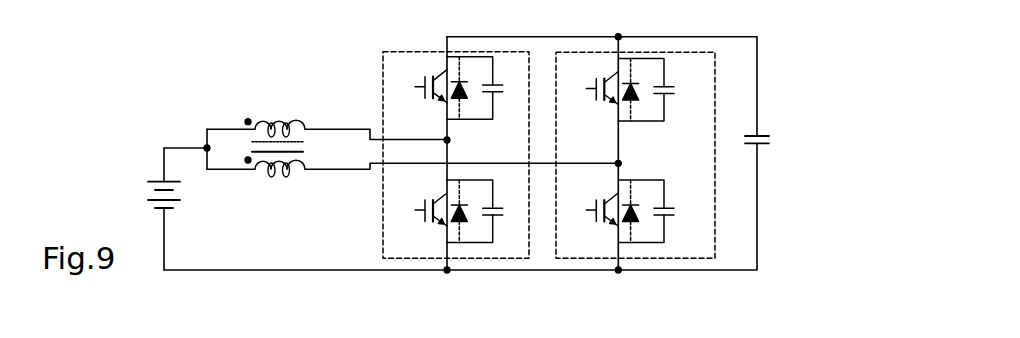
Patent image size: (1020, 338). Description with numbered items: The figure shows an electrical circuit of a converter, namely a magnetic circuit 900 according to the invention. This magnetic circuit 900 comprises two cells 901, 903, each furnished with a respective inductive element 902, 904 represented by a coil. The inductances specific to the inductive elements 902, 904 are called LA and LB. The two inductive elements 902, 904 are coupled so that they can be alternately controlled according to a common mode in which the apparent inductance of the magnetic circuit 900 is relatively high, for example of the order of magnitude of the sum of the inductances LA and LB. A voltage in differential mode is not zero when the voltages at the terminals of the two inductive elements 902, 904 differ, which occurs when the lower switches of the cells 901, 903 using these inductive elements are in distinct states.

The magnetic circuit 900 is at (212, 86).
The cell 901 is at (510, 246).
The inductive element 902 is at (297, 121).
The cell 903 is at (692, 246).
The inductive element 904 is at (290, 171).